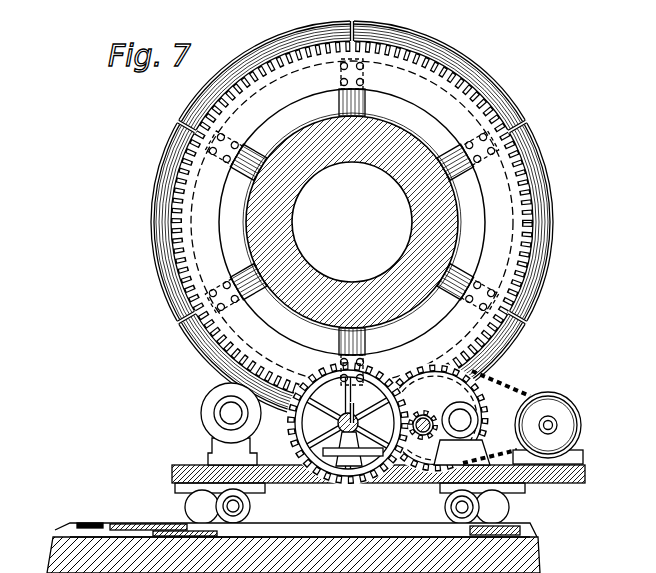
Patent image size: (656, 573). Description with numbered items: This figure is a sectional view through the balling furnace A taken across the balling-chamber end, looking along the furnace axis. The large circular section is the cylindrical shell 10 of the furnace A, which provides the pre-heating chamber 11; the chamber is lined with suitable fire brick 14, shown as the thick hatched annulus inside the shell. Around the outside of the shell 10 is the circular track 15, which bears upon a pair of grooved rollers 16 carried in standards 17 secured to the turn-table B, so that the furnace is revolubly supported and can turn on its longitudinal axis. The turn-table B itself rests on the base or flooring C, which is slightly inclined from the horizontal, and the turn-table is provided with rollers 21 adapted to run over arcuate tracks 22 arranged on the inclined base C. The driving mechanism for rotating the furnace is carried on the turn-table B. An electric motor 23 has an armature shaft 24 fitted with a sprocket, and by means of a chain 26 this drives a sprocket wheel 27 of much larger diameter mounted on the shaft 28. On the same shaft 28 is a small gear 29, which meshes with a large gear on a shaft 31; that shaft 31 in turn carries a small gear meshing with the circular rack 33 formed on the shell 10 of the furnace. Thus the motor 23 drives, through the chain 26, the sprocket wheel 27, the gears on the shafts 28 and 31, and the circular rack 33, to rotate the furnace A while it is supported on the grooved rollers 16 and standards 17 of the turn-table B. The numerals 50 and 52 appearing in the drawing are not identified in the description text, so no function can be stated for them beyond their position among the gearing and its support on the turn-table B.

The furnace A is at (368, 221).
The cylindrical shell 10 is at (457, 222).
The pre-heating chamber 11 is at (455, 237).
The fire brick 14 is at (453, 252).
The circular track 15 is at (547, 272).
The circular rack 33 is at (242, 356).
The grooved rollers 16 is at (212, 393).
The standards 17 is at (208, 440).
The rollers 21 is at (200, 522).
The arcuate tracks 22 is at (98, 524).
The gear support column 50 is at (310, 478).
The shaft 31 is at (331, 473).
The driving gear 52 is at (357, 473).
The small gear 29 is at (417, 440).
The shaft 28 is at (424, 458).
The sprocket wheel 27 is at (488, 380).
The chain 26 is at (516, 408).
The armature shaft 24 is at (552, 424).
The electric motor 23 is at (583, 428).
The turn-table B is at (595, 475).
The base or flooring C is at (547, 552).